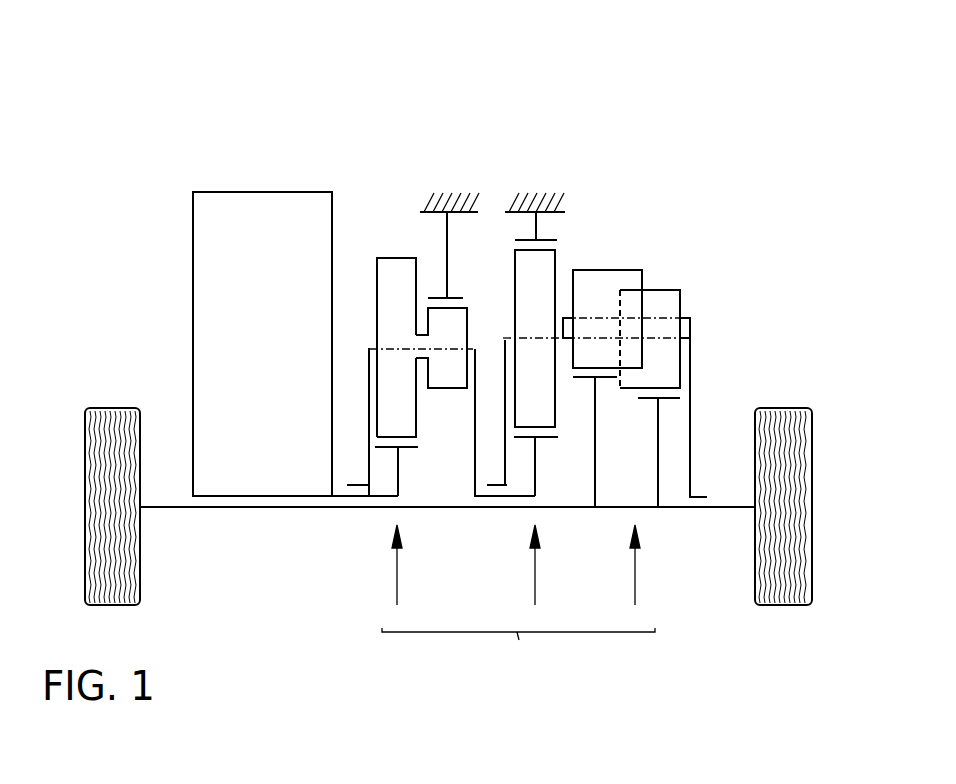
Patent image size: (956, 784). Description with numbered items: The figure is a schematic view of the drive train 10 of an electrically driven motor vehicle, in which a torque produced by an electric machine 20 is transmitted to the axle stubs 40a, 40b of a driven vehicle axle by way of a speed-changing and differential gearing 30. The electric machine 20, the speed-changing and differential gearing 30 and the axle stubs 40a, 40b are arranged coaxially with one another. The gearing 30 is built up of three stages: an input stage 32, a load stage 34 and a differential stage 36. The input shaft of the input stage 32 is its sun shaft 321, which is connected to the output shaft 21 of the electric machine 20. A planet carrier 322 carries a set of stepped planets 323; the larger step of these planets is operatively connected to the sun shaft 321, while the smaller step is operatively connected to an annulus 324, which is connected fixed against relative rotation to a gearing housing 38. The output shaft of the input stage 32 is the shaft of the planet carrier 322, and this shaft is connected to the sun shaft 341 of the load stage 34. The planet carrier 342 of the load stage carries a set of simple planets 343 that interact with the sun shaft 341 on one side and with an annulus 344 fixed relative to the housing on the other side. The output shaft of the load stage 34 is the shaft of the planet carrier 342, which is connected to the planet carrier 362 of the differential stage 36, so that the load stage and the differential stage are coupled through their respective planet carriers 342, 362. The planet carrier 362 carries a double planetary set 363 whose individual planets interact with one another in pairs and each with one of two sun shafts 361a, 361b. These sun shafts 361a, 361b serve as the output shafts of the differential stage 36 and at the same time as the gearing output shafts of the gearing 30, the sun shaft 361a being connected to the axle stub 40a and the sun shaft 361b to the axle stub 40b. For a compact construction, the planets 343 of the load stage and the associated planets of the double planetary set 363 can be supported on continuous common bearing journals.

The drive train 10 is at (703, 100).
The electric machine 20 is at (250, 205).
The output shaft 21 is at (357, 494).
The speed-changing and differential gearing 30 is at (518, 650).
The input stage 32 is at (396, 580).
The load stage 34 is at (536, 580).
The differential stage 36 is at (638, 580).
The gearing housing 38 is at (530, 202).
The sun shaft 321 is at (398, 478).
The planet carrier 322 is at (370, 355).
The stepped planets 323 is at (397, 268).
The annulus 324 is at (447, 247).
The sun shaft 341 is at (535, 478).
The planet carrier 342 is at (505, 340).
The simple planets 343 is at (545, 265).
The annulus 344 is at (537, 217).
The sun shaft 361a is at (595, 480).
The sun shaft 361b is at (660, 478).
The planet carrier 362 is at (691, 330).
The double planetary set 363 is at (643, 292).
The axle stub 40a is at (170, 507).
The axle stub 40b is at (731, 507).